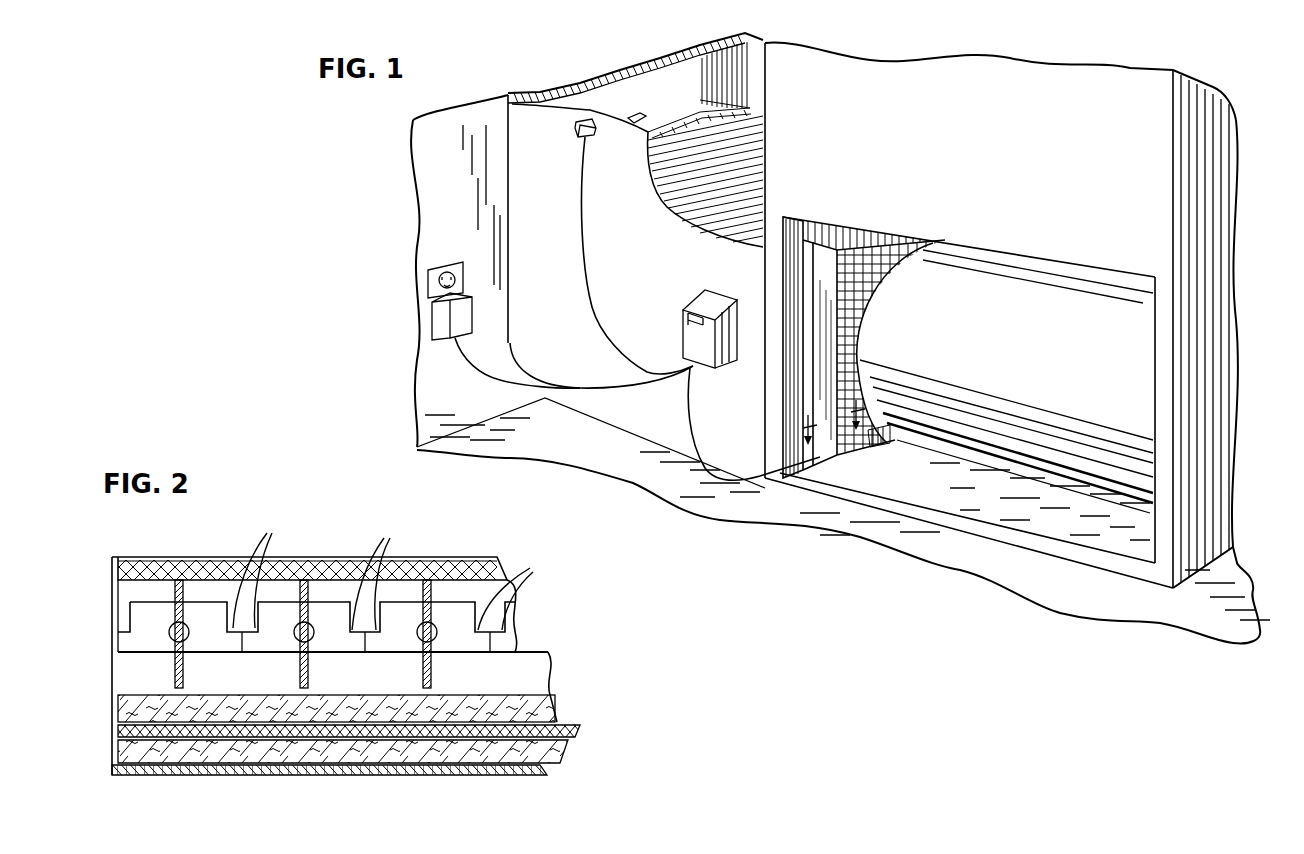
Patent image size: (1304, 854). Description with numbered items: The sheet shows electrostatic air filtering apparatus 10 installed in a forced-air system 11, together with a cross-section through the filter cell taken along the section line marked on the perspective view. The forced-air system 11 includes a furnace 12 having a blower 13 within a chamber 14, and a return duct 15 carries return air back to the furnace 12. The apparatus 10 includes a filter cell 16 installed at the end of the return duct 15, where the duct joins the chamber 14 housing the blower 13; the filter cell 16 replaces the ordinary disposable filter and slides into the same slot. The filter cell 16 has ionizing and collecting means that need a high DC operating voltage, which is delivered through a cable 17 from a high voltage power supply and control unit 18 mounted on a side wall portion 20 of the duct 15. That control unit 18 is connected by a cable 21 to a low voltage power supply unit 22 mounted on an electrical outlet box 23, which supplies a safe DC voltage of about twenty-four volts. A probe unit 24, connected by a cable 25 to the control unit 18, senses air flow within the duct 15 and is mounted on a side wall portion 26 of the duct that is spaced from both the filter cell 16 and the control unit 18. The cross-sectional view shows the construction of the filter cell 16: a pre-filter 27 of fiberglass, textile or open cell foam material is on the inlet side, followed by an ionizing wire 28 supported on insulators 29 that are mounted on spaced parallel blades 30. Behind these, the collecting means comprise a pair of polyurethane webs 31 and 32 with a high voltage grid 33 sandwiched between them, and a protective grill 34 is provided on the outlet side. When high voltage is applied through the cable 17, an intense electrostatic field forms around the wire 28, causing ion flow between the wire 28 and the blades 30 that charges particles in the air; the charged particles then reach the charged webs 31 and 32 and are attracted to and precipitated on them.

In FIG. 1, the air filtering apparatus 10 is at (403, 236).
In FIG. 1, the forced-air system 11 is at (636, 53).
In FIG. 1, the furnace 12 is at (1236, 251).
In FIG. 1, the blower 13 is at (1040, 268).
In FIG. 1, the chamber 14 is at (1002, 510).
In FIG. 1, the return duct 15 is at (503, 177).
In FIG. 1, the filter cell 16 is at (840, 465).
In FIG. 1, the cable 17 is at (697, 462).
In FIG. 1, the high voltage power supply and control unit 18 is at (723, 286).
In FIG. 1, the side wall portion 20 is at (693, 378).
In FIG. 1, the cable 21 is at (583, 387).
In FIG. 1, the low voltage power supply unit 22 is at (470, 312).
In FIG. 1, the electrical outlet box 23 is at (470, 268).
In FIG. 1, the probe unit 24 is at (633, 107).
In FIG. 1, the cable 25 is at (591, 277).
In FIG. 1, the side wall portion 26 is at (573, 98).
In FIG. 2, the pre-filter 27 is at (413, 560).
In FIG. 2, the ionizing wire 28 is at (128, 622).
In FIG. 2, the insulators 29 is at (138, 638).
In FIG. 2, the blades 30 is at (176, 558).
In FIG. 2, the polyurethane web 31 is at (122, 708).
In FIG. 2, the polyurethane web 32 is at (150, 762).
In FIG. 2, the high voltage grid 33 is at (120, 731).
In FIG. 2, the protective grill 34 is at (247, 775).